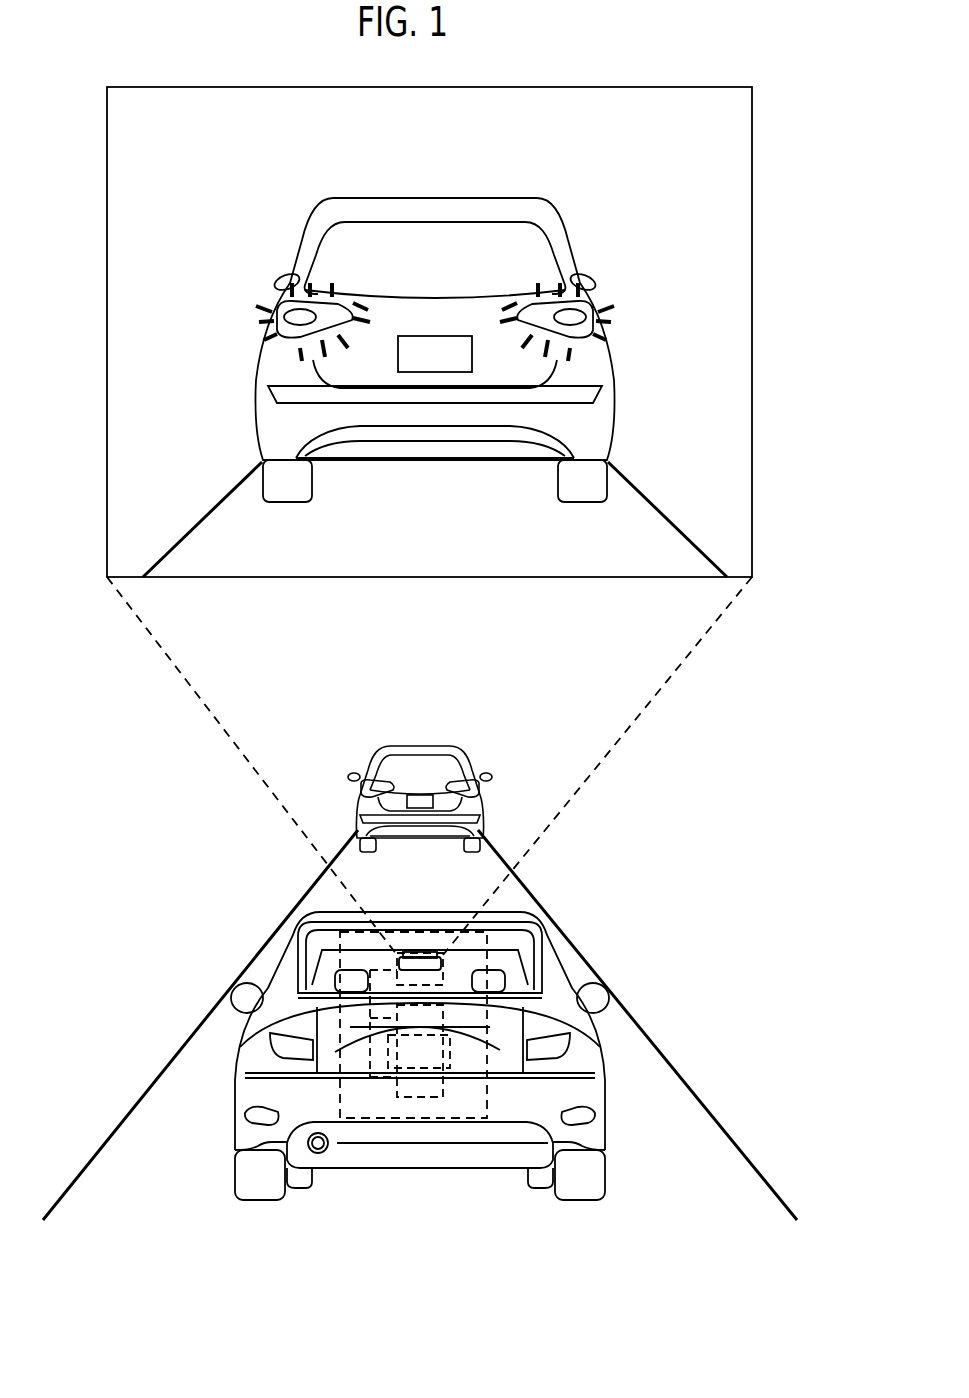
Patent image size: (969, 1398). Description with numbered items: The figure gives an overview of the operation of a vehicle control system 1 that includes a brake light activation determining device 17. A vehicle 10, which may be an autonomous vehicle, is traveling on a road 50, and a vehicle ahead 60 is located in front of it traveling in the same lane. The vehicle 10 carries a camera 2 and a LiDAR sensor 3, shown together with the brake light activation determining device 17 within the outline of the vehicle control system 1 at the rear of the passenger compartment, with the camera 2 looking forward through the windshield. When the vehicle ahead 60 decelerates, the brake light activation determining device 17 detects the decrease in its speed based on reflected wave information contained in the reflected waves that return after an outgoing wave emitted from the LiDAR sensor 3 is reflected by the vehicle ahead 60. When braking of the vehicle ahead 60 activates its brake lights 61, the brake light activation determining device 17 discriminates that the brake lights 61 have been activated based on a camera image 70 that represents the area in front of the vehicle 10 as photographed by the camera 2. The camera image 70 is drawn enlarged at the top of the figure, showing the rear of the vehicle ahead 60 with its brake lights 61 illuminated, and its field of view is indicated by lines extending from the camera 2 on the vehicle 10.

The vehicle control system 1 is at (340, 962).
The camera 2 is at (447, 970).
The LiDAR sensor 3 is at (447, 1018).
The vehicle 10 is at (234, 1143).
The brake light activation determining device 17 is at (447, 1084).
The road 50 is at (140, 1097).
The vehicle ahead 60 is at (424, 763).
The brake lights 61 is at (362, 790).
The camera image 70 is at (107, 354).